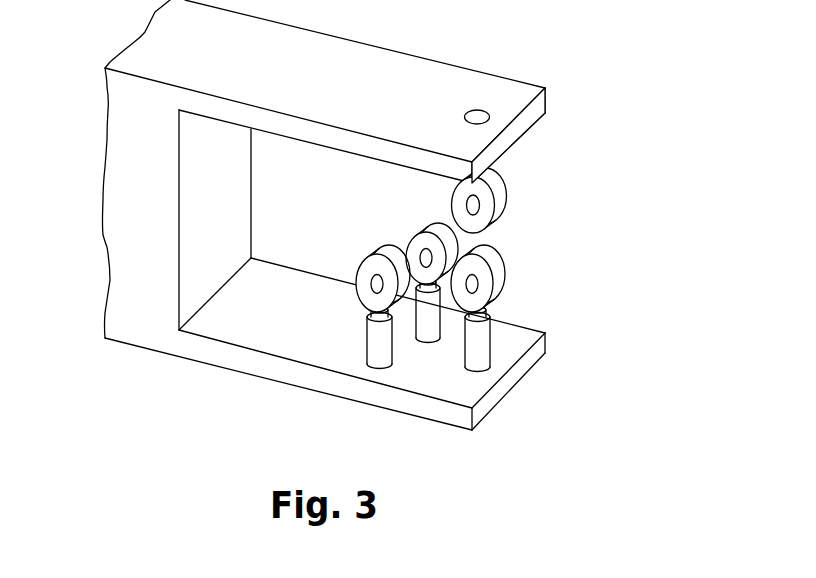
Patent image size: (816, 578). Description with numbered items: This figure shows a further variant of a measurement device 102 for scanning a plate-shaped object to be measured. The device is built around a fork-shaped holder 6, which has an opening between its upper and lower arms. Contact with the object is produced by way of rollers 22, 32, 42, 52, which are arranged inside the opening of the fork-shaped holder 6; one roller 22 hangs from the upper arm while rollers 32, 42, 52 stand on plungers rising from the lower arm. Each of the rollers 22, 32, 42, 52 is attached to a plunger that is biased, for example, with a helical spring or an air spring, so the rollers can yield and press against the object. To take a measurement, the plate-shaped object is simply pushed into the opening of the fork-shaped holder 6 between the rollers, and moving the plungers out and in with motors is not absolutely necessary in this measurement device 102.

The fork-shaped holder 6 is at (125, 238).
The roller 22 is at (485, 203).
The roller 32 is at (487, 282).
The roller 42 is at (367, 275).
The roller 52 is at (423, 240).
The measurement device 102 is at (618, 25).